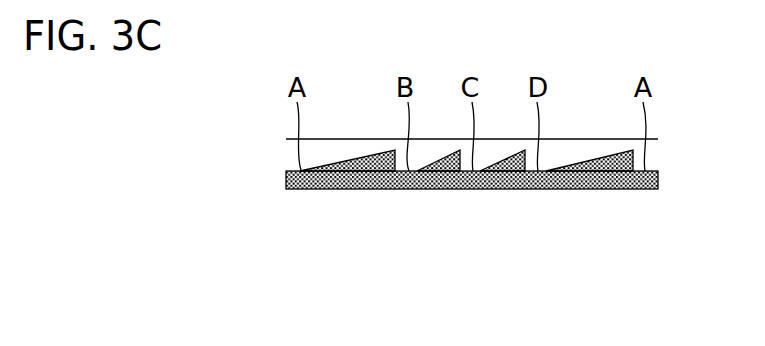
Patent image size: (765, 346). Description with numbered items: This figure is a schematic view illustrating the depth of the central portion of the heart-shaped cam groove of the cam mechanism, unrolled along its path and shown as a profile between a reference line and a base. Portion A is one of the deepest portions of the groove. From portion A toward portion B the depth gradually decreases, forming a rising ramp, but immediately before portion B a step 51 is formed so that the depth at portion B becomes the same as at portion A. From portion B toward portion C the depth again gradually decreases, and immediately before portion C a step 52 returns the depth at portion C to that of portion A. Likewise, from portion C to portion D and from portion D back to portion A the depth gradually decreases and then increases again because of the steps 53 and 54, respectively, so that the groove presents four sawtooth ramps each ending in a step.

The step 51 is at (392, 162).
The step 52 is at (454, 162).
The step 53 is at (517, 162).
The step 54 is at (629, 162).